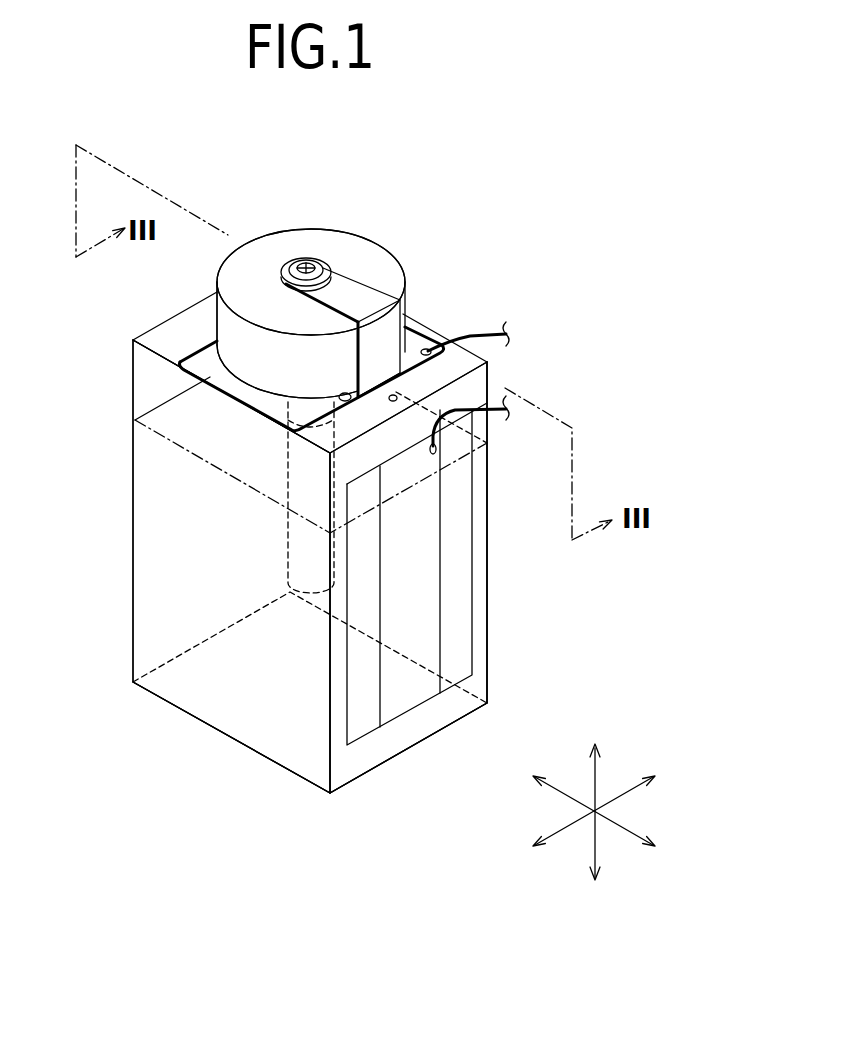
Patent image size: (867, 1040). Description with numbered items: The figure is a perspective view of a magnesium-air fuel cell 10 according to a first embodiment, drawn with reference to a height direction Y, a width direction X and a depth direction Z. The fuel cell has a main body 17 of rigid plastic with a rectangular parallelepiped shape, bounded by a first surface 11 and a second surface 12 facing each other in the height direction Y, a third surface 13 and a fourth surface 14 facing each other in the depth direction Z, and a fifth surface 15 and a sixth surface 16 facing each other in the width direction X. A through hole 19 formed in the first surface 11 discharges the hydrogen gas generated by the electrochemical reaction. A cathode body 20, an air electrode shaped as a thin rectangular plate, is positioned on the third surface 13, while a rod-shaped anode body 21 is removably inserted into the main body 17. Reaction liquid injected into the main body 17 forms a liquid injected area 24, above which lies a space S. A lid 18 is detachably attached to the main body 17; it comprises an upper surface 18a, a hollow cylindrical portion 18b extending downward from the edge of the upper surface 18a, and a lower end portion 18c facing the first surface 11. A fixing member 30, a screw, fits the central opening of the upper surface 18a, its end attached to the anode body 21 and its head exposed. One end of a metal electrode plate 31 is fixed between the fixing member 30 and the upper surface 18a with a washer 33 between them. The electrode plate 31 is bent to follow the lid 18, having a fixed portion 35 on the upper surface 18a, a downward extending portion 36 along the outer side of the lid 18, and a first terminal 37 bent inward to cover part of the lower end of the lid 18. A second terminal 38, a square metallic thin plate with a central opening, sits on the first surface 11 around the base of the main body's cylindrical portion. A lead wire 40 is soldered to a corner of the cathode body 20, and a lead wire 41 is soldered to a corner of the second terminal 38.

The magnesium-air fuel cell 10 is at (482, 143).
The first surface 11 is at (157, 330).
The second surface 12 is at (250, 712).
The third surface 13 is at (478, 680).
The fourth surface 14 is at (167, 593).
The fifth surface 15 is at (295, 743).
The sixth surface 16 is at (452, 392).
The main body 17 is at (202, 684).
The lid 18 is at (337, 247).
The upper surface 18a is at (358, 253).
The hollow cylindrical portion 18b is at (200, 345).
The lower end portion 18c is at (238, 382).
The through hole 19 is at (396, 402).
The cathode body 20 is at (420, 600).
The anode body 21 is at (287, 448).
The liquid injected area 24 is at (177, 507).
The fixing member 30 is at (303, 258).
The electrode plate 31 is at (368, 278).
The washer 33 is at (287, 260).
The fixed portion 35 is at (368, 296).
The downward extending portion 36 is at (374, 342).
The first terminal 37 is at (343, 398).
The second terminal 38 is at (185, 340).
The lead wire 40 is at (498, 412).
The lead wire 41 is at (487, 328).
The space S is at (193, 413).
The width direction X is at (622, 788).
The height direction Y is at (595, 775).
The depth direction Z is at (620, 823).